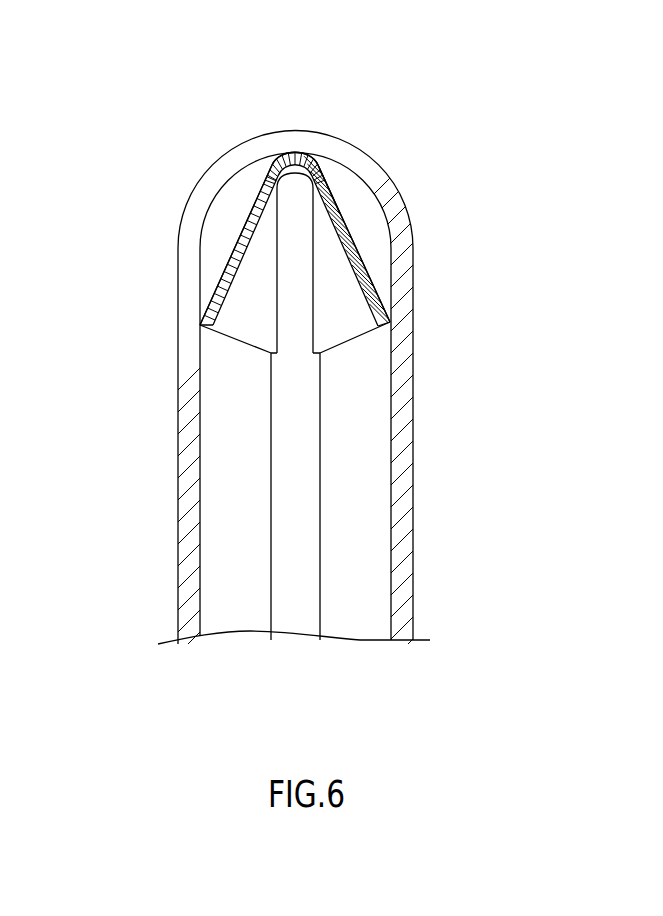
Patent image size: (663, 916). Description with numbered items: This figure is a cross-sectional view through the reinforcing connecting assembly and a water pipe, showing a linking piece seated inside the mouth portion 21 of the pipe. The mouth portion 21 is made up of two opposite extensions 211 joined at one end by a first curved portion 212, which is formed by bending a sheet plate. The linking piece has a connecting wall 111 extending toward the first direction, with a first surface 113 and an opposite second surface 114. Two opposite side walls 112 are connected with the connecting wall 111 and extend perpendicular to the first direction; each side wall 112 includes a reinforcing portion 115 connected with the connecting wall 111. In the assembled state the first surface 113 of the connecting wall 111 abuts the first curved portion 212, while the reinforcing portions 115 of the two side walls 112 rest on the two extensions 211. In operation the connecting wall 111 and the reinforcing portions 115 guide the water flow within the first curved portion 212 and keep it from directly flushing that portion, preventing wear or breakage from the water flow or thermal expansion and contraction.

The mouth portion 21 is at (331, 331).
The extensions 211 is at (186, 413).
The first curved portion 212 is at (235, 150).
The connecting wall 111 is at (293, 155).
The side walls 112 is at (215, 290).
The first surface 113 is at (348, 145).
The second surface 114 is at (300, 170).
The reinforcing portion 115 is at (237, 249).